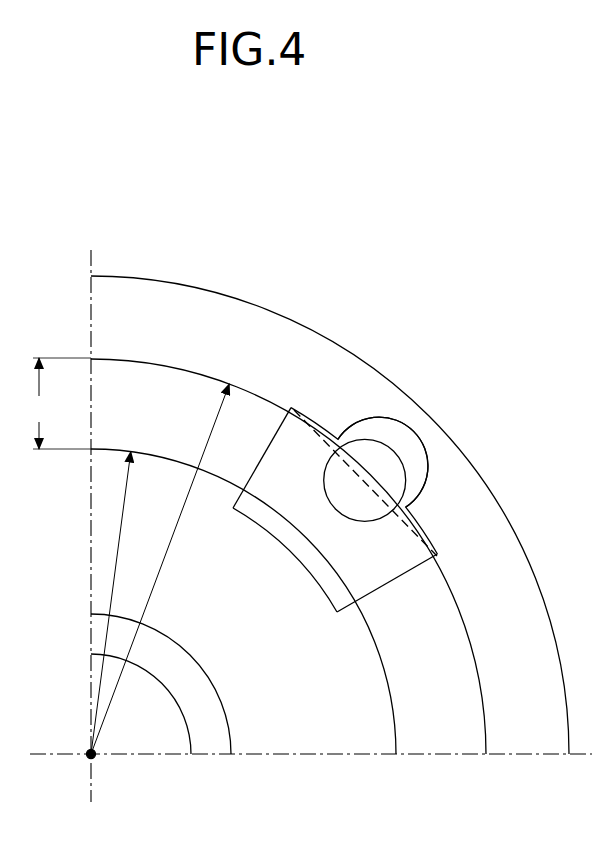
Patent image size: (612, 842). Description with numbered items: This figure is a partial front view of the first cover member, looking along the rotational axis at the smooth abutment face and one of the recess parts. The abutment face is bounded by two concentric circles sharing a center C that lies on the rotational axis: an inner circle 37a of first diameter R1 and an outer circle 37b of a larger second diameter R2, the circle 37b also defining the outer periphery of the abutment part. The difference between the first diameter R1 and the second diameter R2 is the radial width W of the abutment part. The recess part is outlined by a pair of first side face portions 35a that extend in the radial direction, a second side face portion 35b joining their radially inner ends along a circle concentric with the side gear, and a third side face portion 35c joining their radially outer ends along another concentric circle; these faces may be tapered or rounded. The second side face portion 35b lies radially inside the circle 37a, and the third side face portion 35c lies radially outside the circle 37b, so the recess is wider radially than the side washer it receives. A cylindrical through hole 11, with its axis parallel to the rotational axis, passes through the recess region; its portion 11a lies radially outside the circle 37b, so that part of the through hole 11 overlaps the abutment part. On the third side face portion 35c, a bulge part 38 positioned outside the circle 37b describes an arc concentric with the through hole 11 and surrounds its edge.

The through hole 11 is at (385, 513).
The portion of through hole 11a is at (388, 478).
The first side face portion 35a is at (263, 453).
The second side face portion 35b is at (273, 547).
The third side face portion 35c is at (317, 418).
The circle 37a is at (395, 717).
The circle 37b is at (487, 728).
The bulge part 38 is at (393, 438).
The center C is at (89, 756).
The width W is at (59, 403).
The first diameter R1 is at (112, 603).
The second diameter R2 is at (160, 569).